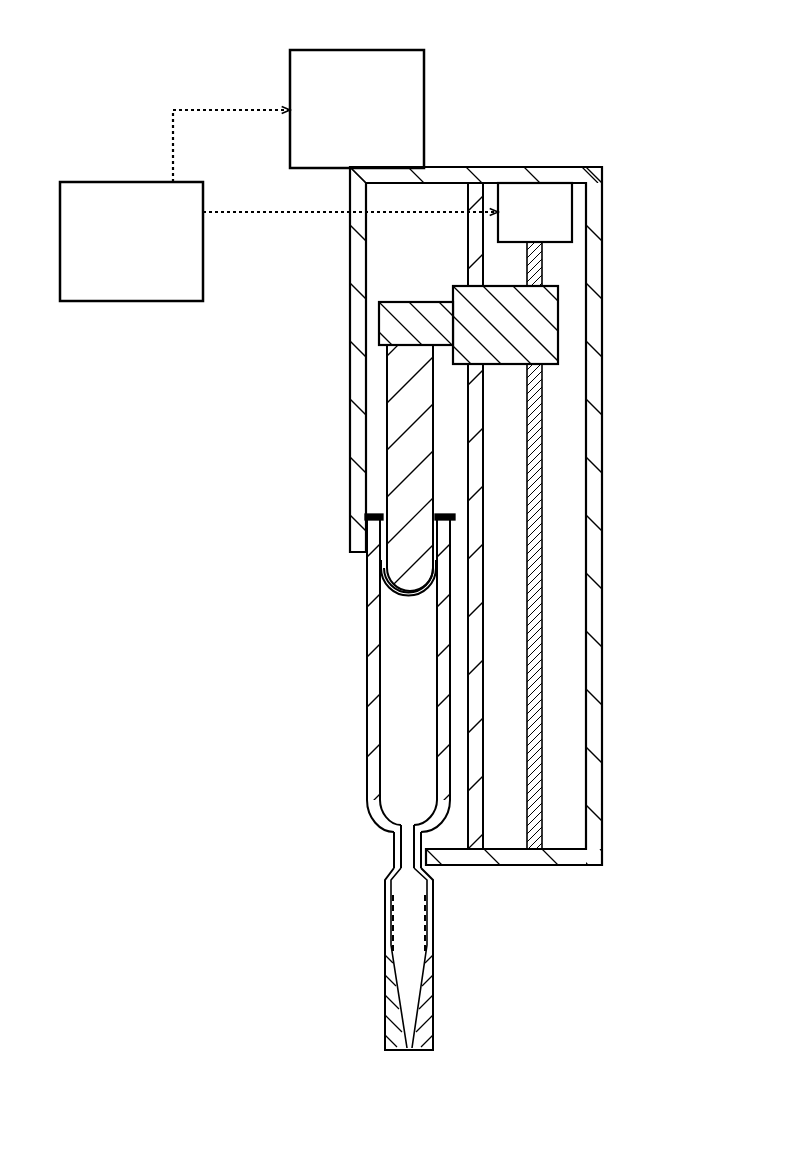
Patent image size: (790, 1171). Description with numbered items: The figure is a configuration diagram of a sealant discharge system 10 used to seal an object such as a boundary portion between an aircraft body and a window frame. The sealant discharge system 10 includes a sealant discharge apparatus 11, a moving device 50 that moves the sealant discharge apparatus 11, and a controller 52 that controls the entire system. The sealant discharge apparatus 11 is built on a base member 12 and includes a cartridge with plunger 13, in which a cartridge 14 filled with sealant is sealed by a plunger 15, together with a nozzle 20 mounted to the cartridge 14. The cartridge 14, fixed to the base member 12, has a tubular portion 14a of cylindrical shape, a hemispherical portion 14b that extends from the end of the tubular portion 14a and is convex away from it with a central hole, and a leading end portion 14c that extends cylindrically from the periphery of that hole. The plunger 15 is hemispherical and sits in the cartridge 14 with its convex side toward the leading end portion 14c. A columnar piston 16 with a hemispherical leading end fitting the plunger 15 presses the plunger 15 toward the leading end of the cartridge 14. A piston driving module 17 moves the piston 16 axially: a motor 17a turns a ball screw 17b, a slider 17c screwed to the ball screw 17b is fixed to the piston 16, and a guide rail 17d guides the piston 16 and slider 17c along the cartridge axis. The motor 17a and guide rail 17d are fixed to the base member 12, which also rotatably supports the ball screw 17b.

The sealant discharge system 10 is at (527, 116).
The sealant discharge apparatus 11 is at (466, 141).
The base member 12 is at (578, 167).
The cartridge with plunger 13 is at (397, 700).
The cartridge 14 is at (397, 700).
The tubular portion 14a is at (367, 782).
The hemispherical portion 14b is at (392, 834).
The leading end portion 14c is at (392, 856).
The plunger 15 is at (423, 600).
The piston 16 is at (394, 463).
The piston driving module 17 is at (521, 520).
The motor 17a is at (572, 212).
The ball screw 17b is at (545, 738).
The slider 17c is at (558, 312).
The guide rail 17d is at (485, 700).
The nozzle 20 is at (445, 918).
The moving device 50 is at (372, 50).
The controller 52 is at (136, 182).